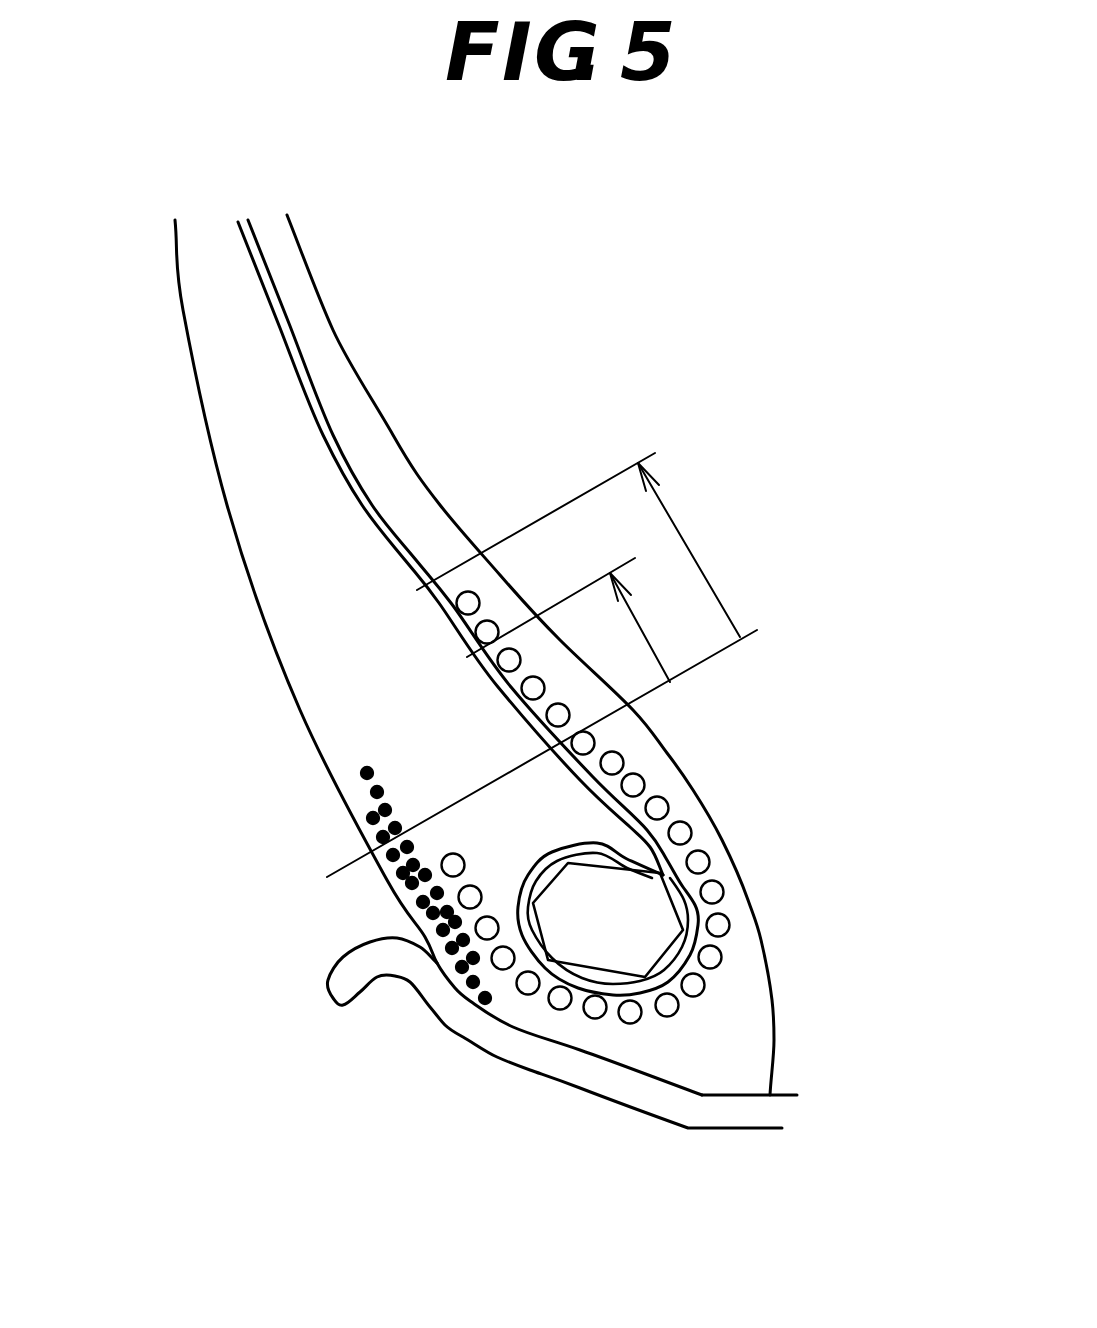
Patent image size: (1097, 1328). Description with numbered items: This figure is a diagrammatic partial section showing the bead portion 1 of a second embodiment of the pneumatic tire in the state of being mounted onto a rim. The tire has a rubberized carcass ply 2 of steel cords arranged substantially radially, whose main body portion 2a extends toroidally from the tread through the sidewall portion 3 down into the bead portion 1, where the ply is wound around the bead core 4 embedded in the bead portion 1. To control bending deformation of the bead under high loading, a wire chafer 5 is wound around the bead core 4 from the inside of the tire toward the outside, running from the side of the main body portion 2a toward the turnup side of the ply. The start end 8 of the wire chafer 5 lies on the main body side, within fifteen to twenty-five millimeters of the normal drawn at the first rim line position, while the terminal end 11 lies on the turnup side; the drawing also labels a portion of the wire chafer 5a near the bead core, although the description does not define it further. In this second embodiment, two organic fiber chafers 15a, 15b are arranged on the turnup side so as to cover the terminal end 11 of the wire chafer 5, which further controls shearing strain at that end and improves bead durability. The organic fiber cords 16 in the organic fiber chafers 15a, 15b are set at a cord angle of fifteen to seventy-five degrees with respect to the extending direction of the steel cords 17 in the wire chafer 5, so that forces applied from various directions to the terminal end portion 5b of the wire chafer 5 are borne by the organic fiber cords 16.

The bead portion 1 is at (773, 1013).
The carcass ply 2 is at (355, 480).
The main body portion 2a is at (308, 398).
The sidewall portion 3 is at (183, 312).
The bead core 4 is at (627, 933).
The wire chafer 5 is at (667, 802).
The cooling hole 5a is at (683, 833).
The terminal end portion 5b is at (487, 928).
The start end 8 is at (462, 592).
The terminal end 11 is at (393, 867).
The organic fiber chafer 15a is at (442, 913).
The organic fiber chafer 15b is at (460, 970).
The organic fiber cords 16 is at (372, 793).
The steel cords 17 is at (640, 787).